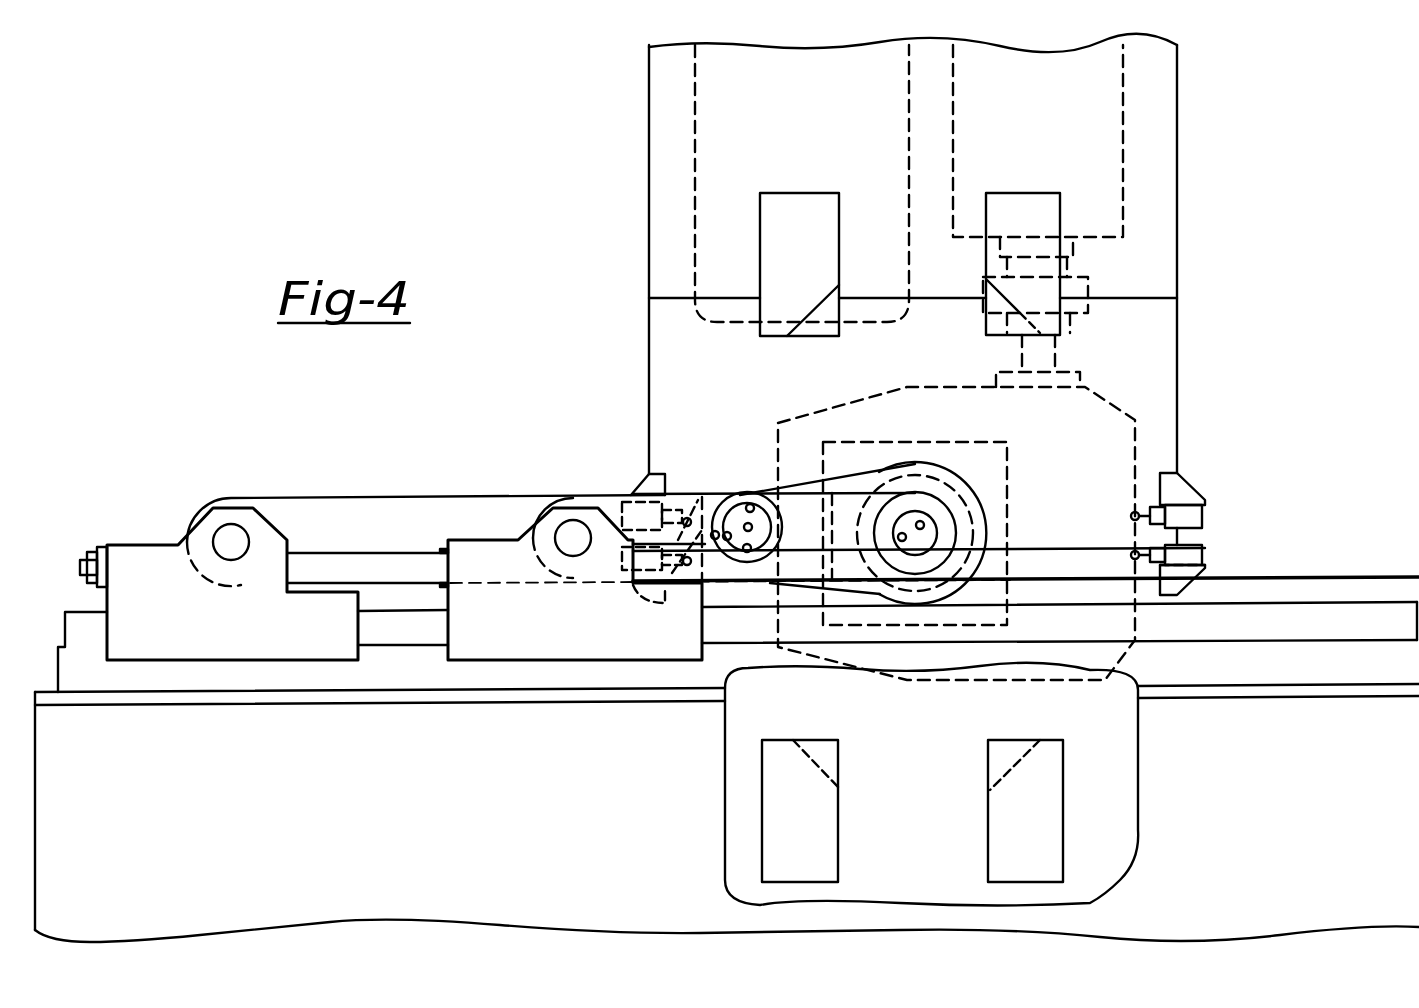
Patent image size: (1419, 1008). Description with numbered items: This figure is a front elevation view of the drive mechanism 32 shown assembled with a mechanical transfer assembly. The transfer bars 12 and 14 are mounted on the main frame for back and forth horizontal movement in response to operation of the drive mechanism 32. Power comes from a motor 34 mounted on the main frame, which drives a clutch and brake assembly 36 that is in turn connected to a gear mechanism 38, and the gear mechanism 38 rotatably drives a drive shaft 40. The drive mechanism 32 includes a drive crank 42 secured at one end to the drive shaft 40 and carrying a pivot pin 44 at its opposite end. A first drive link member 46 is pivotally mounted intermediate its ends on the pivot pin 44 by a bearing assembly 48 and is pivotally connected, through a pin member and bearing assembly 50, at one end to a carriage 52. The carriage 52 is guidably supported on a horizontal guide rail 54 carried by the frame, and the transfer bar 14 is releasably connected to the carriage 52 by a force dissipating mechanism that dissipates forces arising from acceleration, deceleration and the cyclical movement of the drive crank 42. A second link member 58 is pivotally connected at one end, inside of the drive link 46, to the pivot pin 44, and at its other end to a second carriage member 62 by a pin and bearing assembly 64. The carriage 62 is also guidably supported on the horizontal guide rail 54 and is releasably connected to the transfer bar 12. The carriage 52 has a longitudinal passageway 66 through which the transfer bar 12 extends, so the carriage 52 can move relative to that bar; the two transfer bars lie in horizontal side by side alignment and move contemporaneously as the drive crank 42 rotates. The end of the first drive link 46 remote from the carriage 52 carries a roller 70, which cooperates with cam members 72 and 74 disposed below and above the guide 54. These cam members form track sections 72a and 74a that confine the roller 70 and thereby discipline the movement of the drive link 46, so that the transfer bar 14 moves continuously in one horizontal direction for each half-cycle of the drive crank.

The transfer bar 12 is at (322, 562).
The transfer bar 14 is at (737, 570).
The drive mechanism 32 is at (723, 440).
The motor 34 is at (1123, 202).
The clutch and brake assembly 36 is at (1088, 315).
The gear mechanism 38 is at (1138, 457).
The drive shaft 40 is at (983, 488).
The drive crank 42 is at (748, 492).
The pivot pin 44 is at (730, 527).
The first drive link member 46 is at (843, 507).
The bearing assembly 48 is at (767, 518).
The bearing assembly 50 is at (568, 525).
The carriage 52 is at (558, 648).
The horizontal guide rail 54 is at (420, 640).
The second link member 58 is at (415, 503).
The second carriage member 62 is at (137, 548).
The pin and bearing assembly 64 is at (232, 532).
The longitudinal passageway 66 is at (445, 587).
The roller 70 is at (987, 530).
The cam member 72 is at (833, 827).
The track section 72a is at (913, 772).
The cam member 74 is at (781, 200).
The track section 74a is at (947, 303).